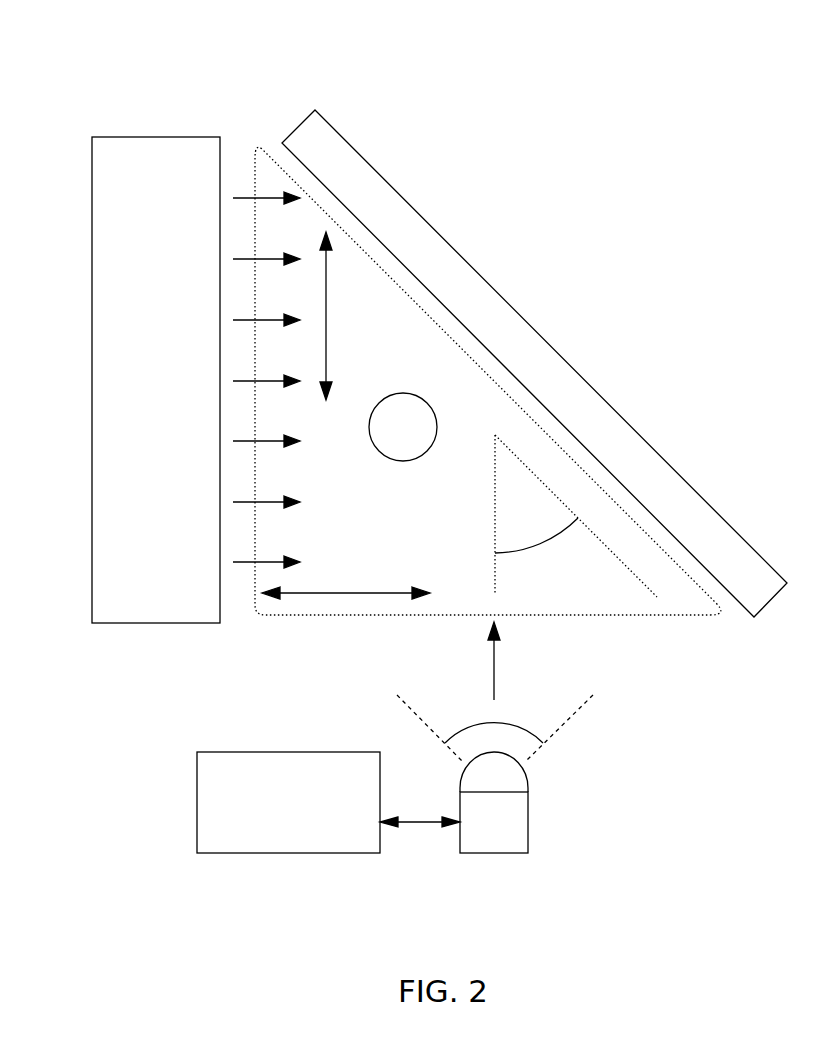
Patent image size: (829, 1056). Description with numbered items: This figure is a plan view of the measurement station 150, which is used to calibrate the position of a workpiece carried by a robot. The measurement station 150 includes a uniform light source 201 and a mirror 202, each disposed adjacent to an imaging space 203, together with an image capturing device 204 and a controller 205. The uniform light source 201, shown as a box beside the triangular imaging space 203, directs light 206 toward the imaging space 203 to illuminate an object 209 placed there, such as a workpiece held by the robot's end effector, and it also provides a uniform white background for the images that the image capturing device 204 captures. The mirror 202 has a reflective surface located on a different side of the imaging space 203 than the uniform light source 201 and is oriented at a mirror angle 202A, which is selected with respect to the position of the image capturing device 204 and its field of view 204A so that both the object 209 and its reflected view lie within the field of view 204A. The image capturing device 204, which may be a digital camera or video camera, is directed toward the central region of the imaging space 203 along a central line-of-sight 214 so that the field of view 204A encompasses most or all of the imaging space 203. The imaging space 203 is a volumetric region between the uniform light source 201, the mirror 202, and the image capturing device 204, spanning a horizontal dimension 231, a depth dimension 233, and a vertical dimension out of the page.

The measurement station 150 is at (601, 48).
The uniform light source 201 is at (138, 428).
The mirror 202 is at (457, 252).
The mirror angle 202A is at (518, 550).
The imaging space 203 is at (298, 618).
The image capturing device 204 is at (528, 827).
The field of view 204A is at (503, 722).
The controller 205 is at (270, 826).
The light 206 is at (247, 565).
The object 209 is at (403, 461).
The central line-of-sight 214 is at (493, 665).
The horizontal dimension 231 is at (318, 592).
The depth dimension 233 is at (327, 308).